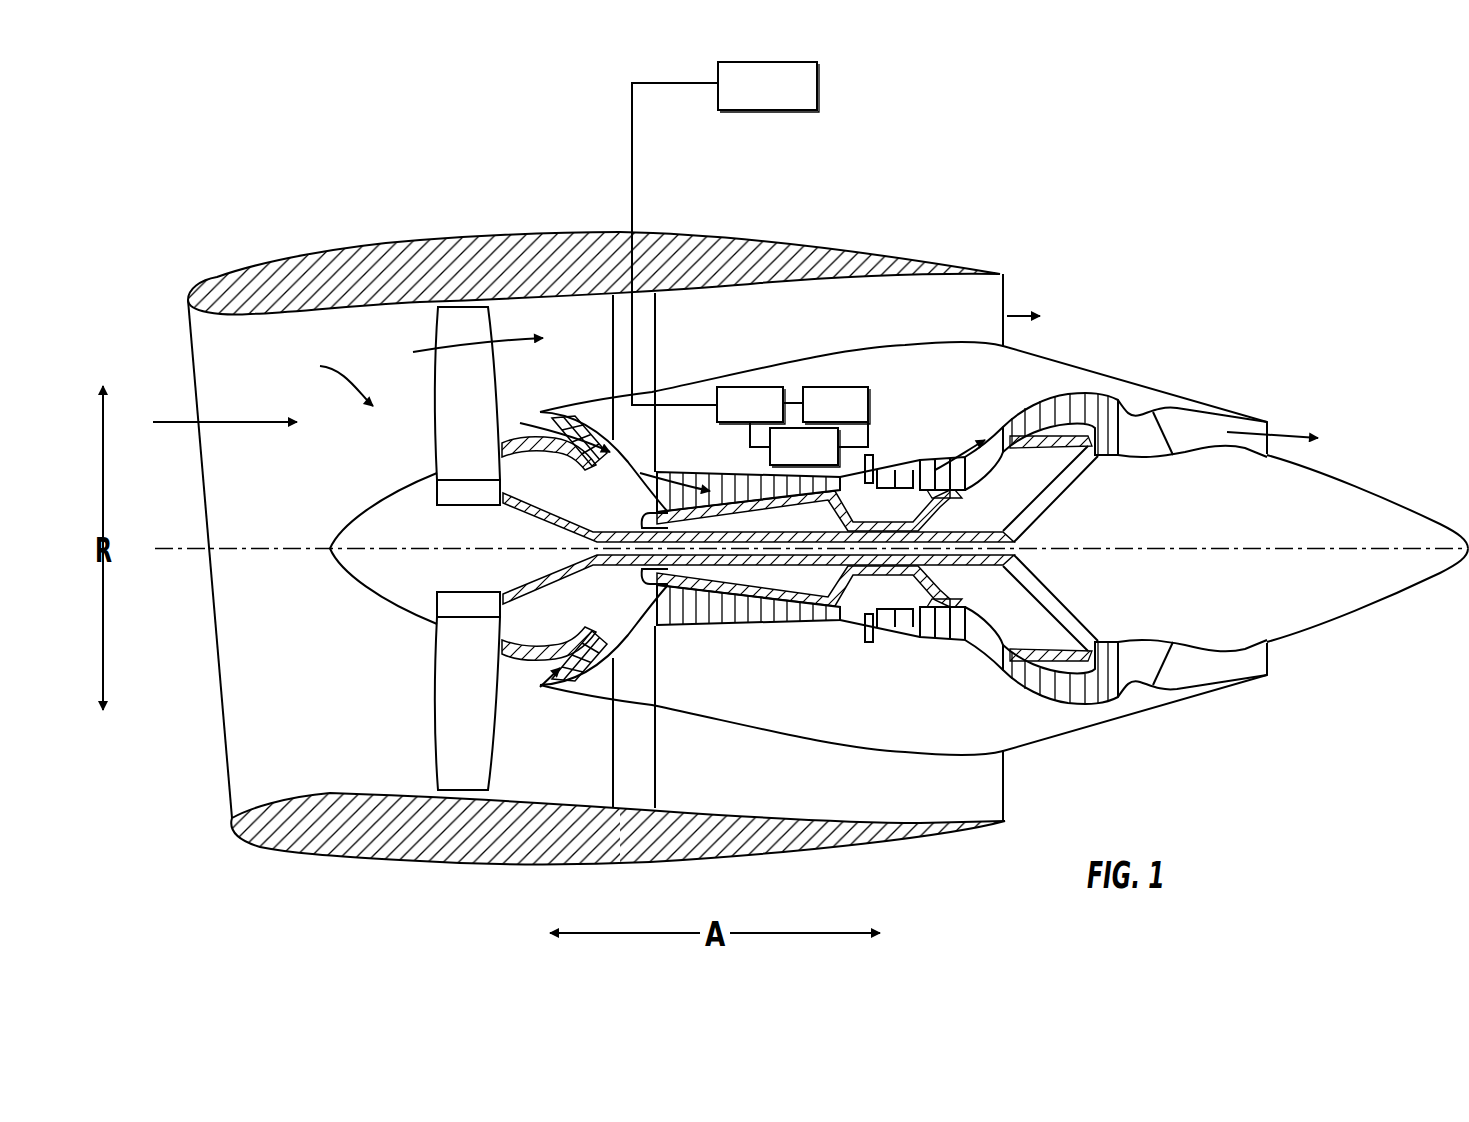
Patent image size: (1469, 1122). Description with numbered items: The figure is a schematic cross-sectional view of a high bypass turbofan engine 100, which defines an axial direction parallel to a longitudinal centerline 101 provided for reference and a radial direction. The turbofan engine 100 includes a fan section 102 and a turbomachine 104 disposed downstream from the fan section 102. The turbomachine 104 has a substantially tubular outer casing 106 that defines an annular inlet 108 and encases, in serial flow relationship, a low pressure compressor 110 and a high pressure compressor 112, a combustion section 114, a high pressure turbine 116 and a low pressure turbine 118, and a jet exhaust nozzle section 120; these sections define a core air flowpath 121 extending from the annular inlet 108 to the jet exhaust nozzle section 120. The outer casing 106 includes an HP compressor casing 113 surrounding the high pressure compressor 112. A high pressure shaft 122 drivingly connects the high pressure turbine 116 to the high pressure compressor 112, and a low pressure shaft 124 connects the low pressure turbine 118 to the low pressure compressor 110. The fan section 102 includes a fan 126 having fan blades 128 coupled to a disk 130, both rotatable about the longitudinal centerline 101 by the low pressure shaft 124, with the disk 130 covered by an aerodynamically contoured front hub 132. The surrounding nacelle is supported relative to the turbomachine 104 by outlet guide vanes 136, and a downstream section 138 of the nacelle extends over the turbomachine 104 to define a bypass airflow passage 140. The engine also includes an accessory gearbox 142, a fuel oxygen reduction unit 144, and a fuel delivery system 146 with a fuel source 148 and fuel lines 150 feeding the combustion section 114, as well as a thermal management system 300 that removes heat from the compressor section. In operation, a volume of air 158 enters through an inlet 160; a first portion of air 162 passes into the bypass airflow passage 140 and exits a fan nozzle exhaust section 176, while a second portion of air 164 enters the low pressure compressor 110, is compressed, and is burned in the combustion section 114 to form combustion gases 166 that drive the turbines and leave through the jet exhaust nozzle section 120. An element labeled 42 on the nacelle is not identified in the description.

The nacelle aft section 42 is at (490, 866).
The turbofan engine 100 is at (1170, 240).
The longitudinal centerline 101 is at (1233, 547).
The fan section 102 is at (383, 322).
The turbomachine 104 is at (779, 342).
The outer casing 106 is at (847, 740).
The annular inlet 108 is at (540, 687).
The low pressure compressor 110 is at (586, 690).
The high pressure compressor 112 is at (690, 616).
The HP compressor casing 113 is at (677, 465).
The combustion section 114 is at (887, 625).
The high pressure turbine 116 is at (1010, 605).
The low pressure turbine 118 is at (1098, 703).
The jet exhaust nozzle section 120 is at (1168, 672).
The core air flowpath 121 is at (637, 636).
The high pressure shaft 122 is at (888, 520).
The low pressure shaft 124 is at (953, 537).
The fan 126 is at (328, 378).
The fan blades 128 is at (430, 722).
The disk 130 is at (450, 497).
The front hub 132 is at (345, 568).
The outlet guide vanes 136 is at (654, 326).
The downstream section of the nacelle 138 is at (594, 231).
The bypass airflow passage 140 is at (883, 326).
The accessory gearbox 142 is at (815, 420).
The fuel oxygen reduction unit 144 is at (730, 420).
The fuel delivery system 146 is at (545, 92).
The fuel source 148 is at (747, 101).
The fuel lines 150 is at (633, 178).
The volume of air 158 is at (223, 421).
The inlet 160 is at (228, 787).
The first portion of air 162 is at (467, 348).
The second portion of air 164 is at (540, 410).
The combustion gases 166 is at (950, 457).
The fan nozzle exhaust section 176 is at (1007, 291).
The thermal management system 300 is at (784, 461).